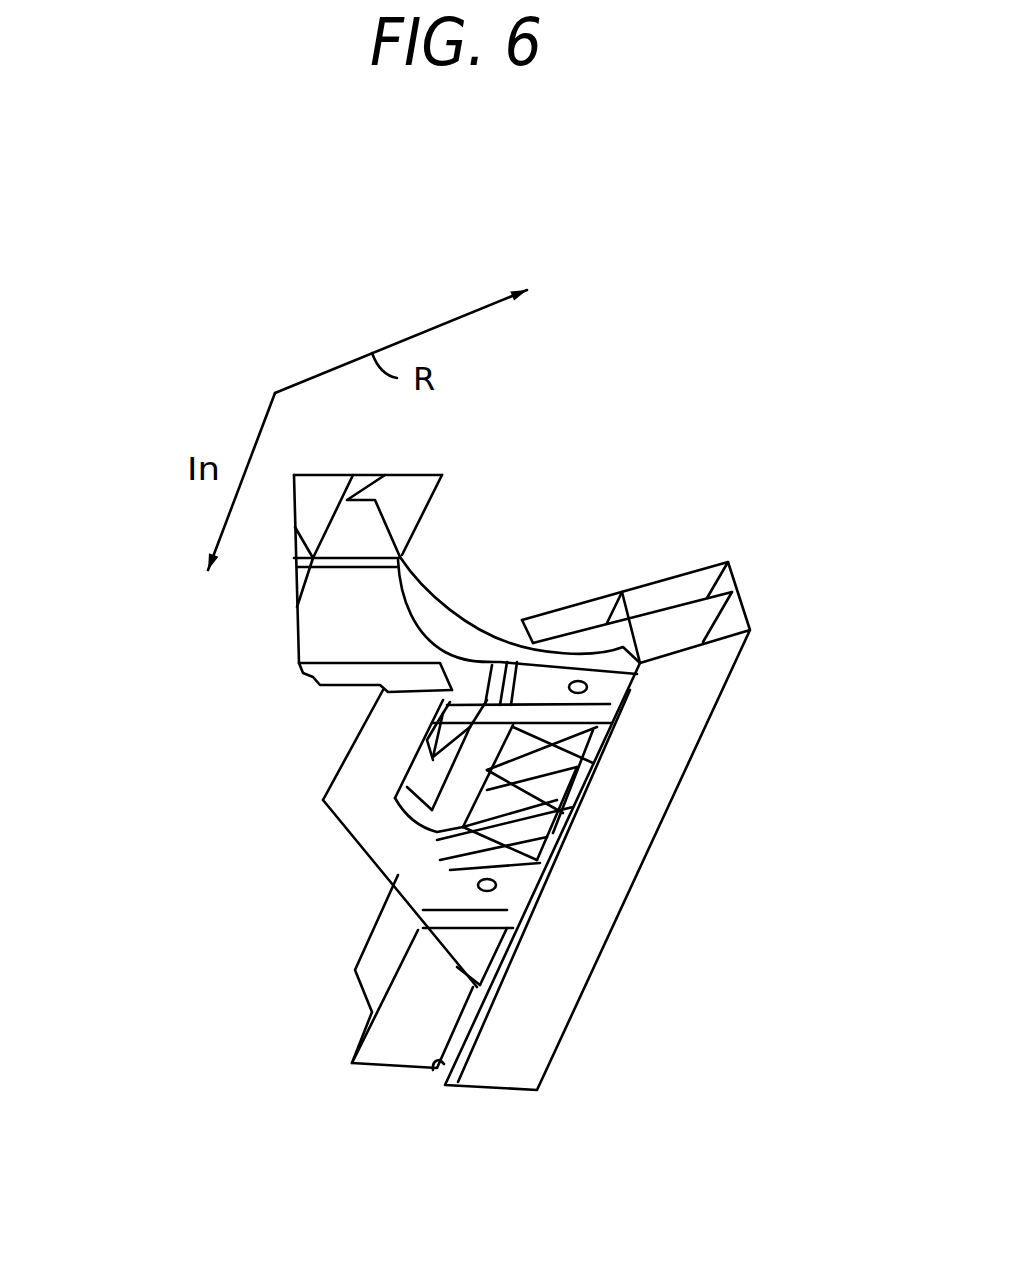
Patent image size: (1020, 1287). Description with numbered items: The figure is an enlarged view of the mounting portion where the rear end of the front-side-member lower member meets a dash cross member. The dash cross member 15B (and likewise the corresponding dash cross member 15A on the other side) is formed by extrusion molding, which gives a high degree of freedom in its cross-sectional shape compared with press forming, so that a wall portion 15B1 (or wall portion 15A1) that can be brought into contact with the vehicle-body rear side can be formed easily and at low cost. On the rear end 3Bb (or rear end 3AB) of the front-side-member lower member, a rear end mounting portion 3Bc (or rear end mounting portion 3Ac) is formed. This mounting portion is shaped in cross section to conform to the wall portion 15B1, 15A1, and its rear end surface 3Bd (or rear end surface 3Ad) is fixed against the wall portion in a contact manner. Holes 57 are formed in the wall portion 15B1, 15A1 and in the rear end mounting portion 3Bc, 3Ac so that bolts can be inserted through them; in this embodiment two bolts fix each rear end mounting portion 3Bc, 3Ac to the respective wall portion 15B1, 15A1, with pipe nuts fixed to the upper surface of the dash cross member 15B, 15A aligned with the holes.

The dash cross member 15B is at (640, 764).
The dash cross member 15A is at (673, 573).
The wall portion 15B1 is at (541, 1112).
The wall portion 15A1 is at (433, 1072).
The rear end 3Bb is at (361, 590).
The rear end 3AB is at (304, 618).
The rear end mounting portion 3Bc is at (396, 879).
The rear end mounting portion 3Ac is at (400, 848).
The rear end surface 3Bd is at (666, 817).
The rear end surface 3Ad is at (573, 790).
The hole 57 is at (587, 691).